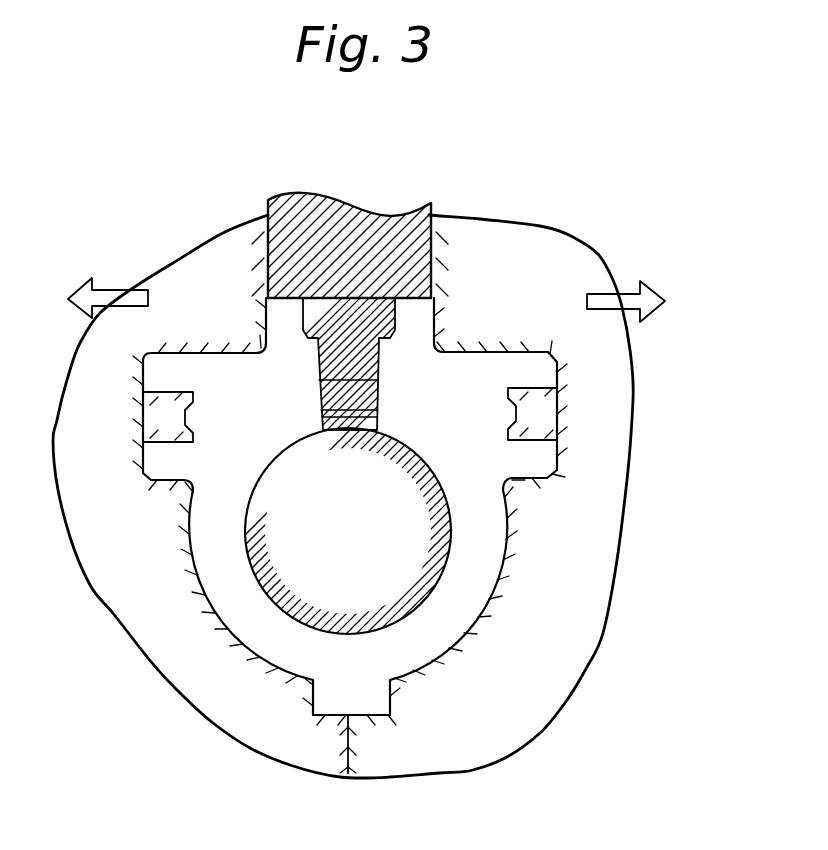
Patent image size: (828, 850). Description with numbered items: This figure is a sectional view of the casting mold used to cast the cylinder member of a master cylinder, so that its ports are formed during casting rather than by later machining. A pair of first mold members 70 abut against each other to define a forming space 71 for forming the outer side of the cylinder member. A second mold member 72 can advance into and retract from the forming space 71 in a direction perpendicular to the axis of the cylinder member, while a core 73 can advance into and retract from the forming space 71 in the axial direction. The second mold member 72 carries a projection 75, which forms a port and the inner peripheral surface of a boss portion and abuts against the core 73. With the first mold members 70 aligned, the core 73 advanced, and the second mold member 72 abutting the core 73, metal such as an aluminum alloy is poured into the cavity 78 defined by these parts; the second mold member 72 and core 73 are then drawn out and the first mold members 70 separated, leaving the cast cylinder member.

The first mold members 70 is at (243, 700).
The forming space 71 is at (472, 615).
The second mold member 72 is at (430, 252).
The core 73 is at (247, 557).
The projection 75 is at (378, 372).
The cavity 78 is at (483, 463).